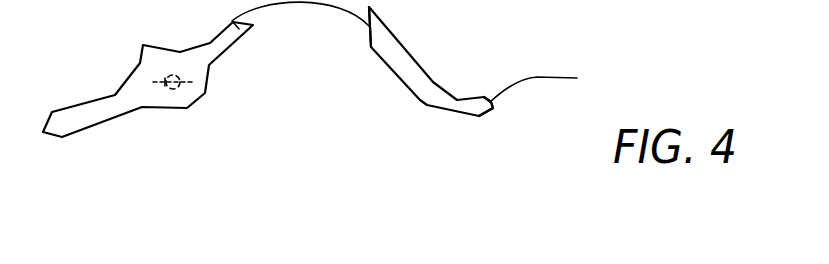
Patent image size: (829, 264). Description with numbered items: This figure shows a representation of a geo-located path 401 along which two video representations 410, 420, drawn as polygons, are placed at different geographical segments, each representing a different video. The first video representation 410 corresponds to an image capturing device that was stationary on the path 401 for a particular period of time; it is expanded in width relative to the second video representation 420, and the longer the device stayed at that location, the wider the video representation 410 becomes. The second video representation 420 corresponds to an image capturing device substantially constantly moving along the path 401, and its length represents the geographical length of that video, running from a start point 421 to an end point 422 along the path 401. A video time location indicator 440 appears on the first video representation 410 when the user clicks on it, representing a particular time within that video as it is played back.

The geo-located path 401 is at (537, 77).
The first video representation 410 is at (135, 80).
The second video representation 420 is at (402, 62).
The start point 421 is at (367, 27).
The end point 422 is at (493, 108).
The video time location indicator 440 is at (173, 88).